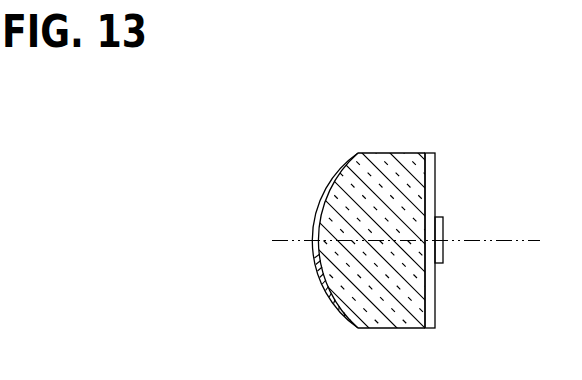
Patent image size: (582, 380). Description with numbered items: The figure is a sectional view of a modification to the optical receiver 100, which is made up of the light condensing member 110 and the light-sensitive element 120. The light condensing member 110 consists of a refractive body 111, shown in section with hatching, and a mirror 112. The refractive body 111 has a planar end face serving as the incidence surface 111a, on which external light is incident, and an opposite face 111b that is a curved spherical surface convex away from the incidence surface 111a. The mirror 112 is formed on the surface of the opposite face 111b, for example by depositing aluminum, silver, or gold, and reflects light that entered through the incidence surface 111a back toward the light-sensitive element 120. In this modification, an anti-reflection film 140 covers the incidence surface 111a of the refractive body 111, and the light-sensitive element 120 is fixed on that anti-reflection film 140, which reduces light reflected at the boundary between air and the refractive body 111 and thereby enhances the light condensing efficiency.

The optical receiver 100 is at (448, 147).
The light condensing member 110 is at (417, 102).
The refractive body 111 is at (392, 152).
The incidence surface 111a is at (425, 308).
The opposite face 111b is at (318, 257).
The mirror 112 is at (352, 159).
The light-sensitive element 120 is at (443, 229).
The anti-reflection film 140 is at (436, 191).